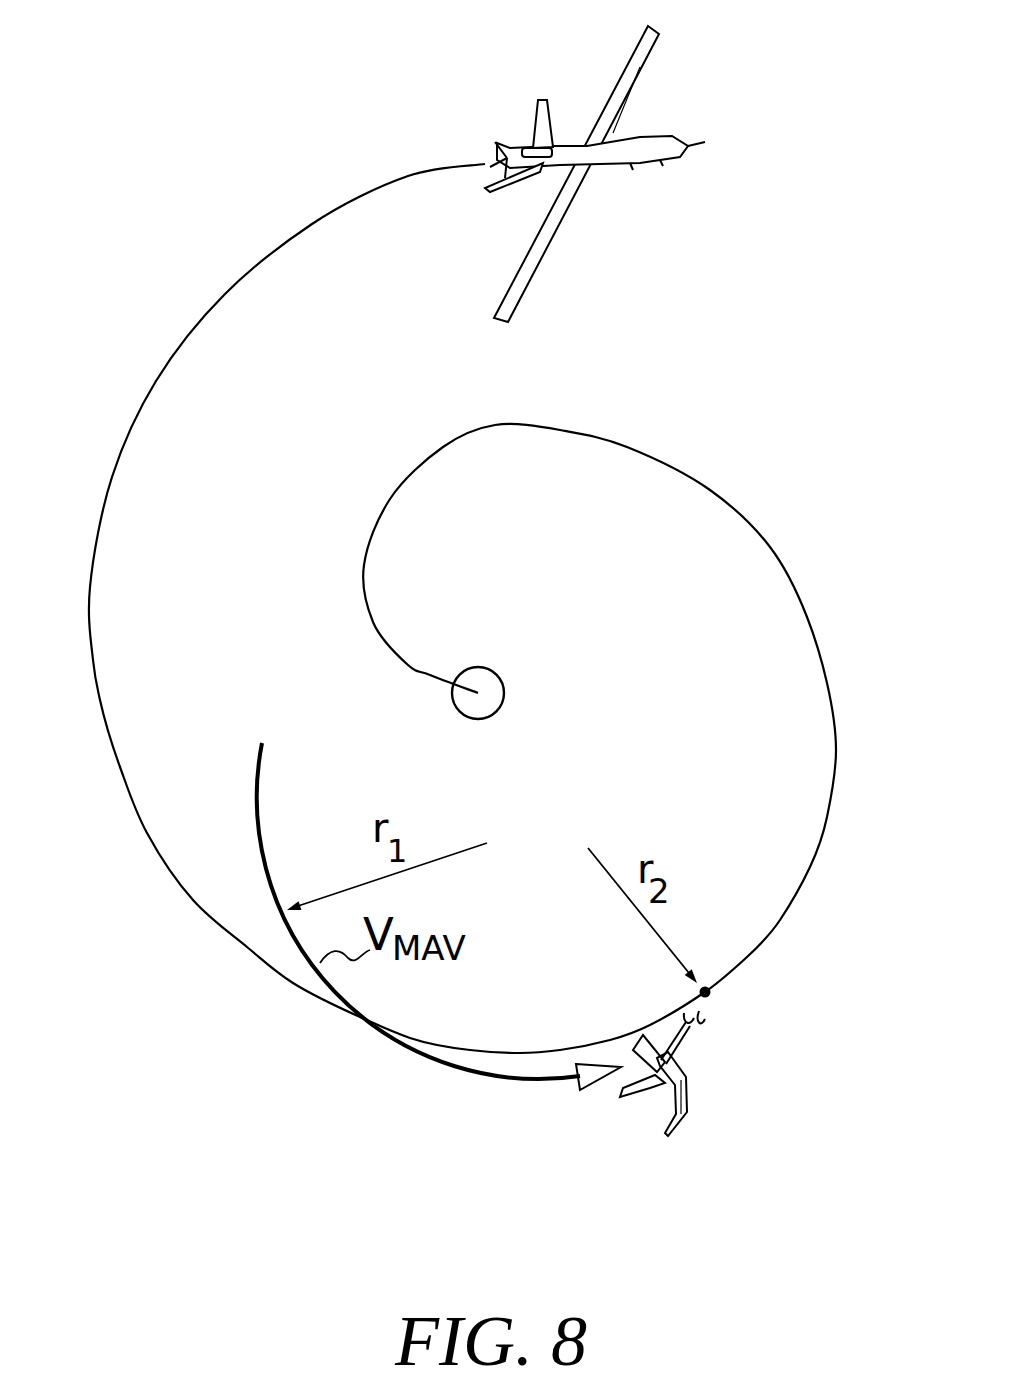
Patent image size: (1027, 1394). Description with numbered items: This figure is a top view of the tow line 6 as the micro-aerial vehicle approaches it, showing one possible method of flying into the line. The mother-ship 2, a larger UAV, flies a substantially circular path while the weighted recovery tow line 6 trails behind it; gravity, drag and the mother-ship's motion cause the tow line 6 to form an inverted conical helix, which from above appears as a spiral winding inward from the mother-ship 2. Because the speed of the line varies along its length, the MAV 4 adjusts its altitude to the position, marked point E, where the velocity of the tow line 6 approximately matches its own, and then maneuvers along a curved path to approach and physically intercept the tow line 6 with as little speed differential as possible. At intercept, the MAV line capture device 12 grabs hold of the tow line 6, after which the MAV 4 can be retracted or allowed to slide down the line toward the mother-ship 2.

The mother-ship 2 is at (585, 116).
The micro-aerial vehicle (MAV) 4 is at (688, 1118).
The weighted recovery tow line 6 is at (770, 547).
The MAV line capture device 12 is at (703, 1027).
The point E is at (710, 994).